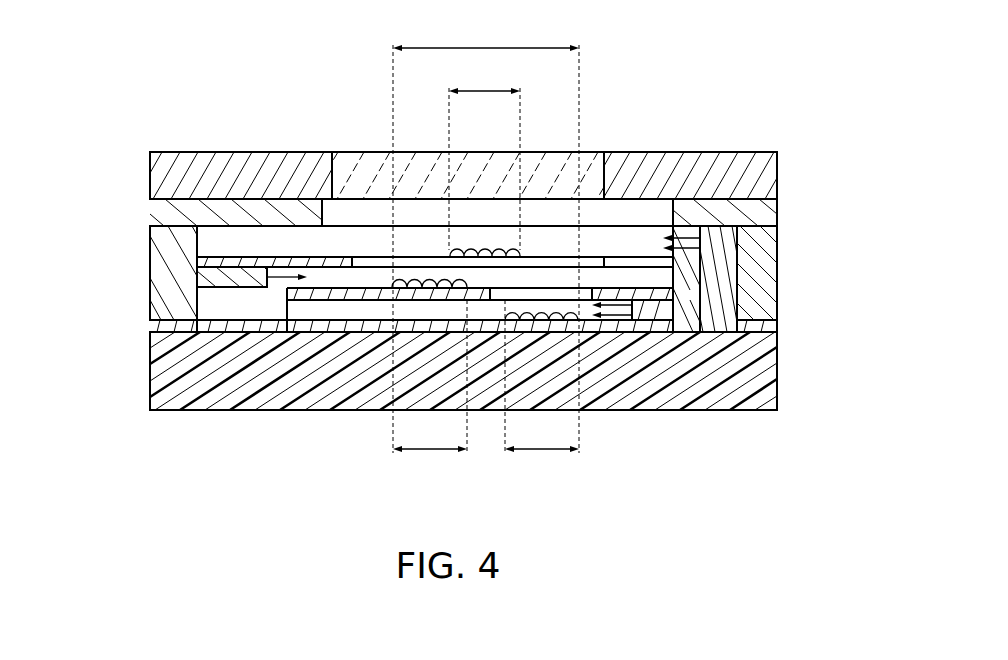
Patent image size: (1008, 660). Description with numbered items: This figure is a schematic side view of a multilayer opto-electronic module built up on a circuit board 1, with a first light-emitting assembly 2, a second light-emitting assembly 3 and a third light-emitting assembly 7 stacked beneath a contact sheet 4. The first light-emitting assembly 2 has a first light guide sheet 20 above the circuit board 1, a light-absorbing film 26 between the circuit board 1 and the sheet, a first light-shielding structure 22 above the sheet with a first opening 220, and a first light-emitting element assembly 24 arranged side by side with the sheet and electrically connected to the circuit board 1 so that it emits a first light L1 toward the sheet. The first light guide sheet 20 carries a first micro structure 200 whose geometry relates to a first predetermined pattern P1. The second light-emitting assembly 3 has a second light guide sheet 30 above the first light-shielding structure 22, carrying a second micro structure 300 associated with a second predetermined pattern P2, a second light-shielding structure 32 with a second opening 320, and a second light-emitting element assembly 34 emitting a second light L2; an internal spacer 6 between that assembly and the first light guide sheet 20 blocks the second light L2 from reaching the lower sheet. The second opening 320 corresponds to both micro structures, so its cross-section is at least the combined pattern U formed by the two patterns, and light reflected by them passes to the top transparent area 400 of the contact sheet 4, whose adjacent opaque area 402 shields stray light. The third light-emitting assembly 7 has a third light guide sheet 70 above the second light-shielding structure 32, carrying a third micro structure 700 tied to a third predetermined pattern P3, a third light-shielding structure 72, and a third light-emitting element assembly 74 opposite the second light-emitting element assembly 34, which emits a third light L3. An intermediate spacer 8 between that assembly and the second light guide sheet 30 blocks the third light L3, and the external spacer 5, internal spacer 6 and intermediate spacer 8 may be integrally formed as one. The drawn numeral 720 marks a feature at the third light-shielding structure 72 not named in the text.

The circuit board 1 is at (163, 381).
The first light-emitting assembly 2 is at (836, 280).
The second light-emitting assembly 3 is at (76, 263).
The contact sheet 4 is at (378, 98).
The external spacer 5 is at (757, 300).
The internal spacer 6 is at (276, 308).
The third light-emitting assembly 7 is at (795, 103).
The intermediate spacer 8 is at (718, 300).
The first light guide sheet 20 is at (477, 310).
The first light-shielding structure 22 is at (675, 283).
The first light-emitting element assembly 24 is at (686, 300).
The light-absorbing film 26 is at (492, 318).
The second light guide sheet 30 is at (250, 296).
The second light-shielding structure 32 is at (232, 262).
The second light-emitting element assembly 34 is at (165, 326).
The third light guide sheet 70 is at (686, 205).
The third light-shielding structure 72 is at (755, 240).
The third light-emitting element assembly 74 is at (715, 240).
The first micro structure 200 is at (640, 310).
The first opening 220 is at (545, 280).
The second micro structure 300 is at (363, 292).
The second opening 320 is at (417, 254).
The top transparent area 400 is at (347, 168).
The opaque area 402 is at (221, 166).
The third micro structure 700 is at (450, 257).
The opening 720 is at (663, 214).
The first light L1 is at (632, 318).
The second light L2 is at (268, 277).
The third light L3 is at (703, 248).
The combined pattern U is at (486, 239).
The first predetermined pattern P1 is at (542, 376).
The second predetermined pattern P2 is at (430, 376).
The third predetermined pattern P3 is at (484, 159).